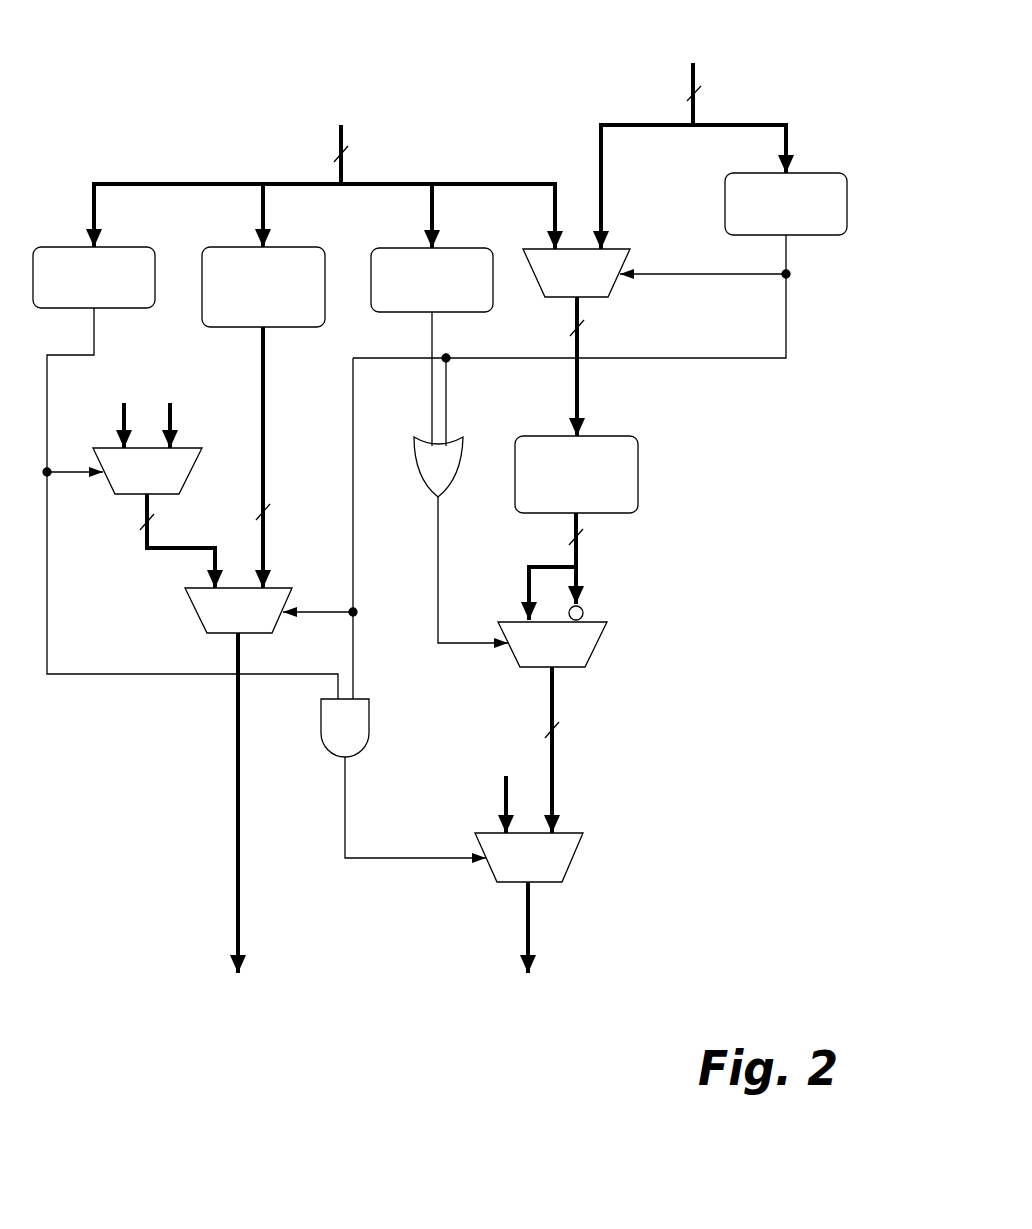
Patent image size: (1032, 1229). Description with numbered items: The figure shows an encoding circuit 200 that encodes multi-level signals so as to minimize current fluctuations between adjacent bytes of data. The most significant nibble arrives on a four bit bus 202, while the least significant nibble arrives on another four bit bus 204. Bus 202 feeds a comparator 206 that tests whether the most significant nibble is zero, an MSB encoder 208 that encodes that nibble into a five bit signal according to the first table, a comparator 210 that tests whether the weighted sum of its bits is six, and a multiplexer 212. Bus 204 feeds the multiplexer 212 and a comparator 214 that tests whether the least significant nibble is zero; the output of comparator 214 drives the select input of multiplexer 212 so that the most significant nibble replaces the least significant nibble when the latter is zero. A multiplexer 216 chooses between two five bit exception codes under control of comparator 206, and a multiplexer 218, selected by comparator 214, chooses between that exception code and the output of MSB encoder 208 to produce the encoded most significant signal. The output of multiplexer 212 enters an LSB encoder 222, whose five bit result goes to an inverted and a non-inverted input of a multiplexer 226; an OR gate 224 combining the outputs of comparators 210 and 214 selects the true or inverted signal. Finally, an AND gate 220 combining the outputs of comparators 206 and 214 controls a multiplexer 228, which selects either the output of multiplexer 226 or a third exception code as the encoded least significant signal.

The encoding circuit 200 is at (140, 75).
The four bit bus 202 is at (138, 183).
The four bit bus 204 is at (630, 123).
The comparator 206 is at (118, 247).
The MSB encoder 208 is at (286, 247).
The comparator 210 is at (455, 248).
The multiplexer 212 is at (622, 249).
The comparator 214 is at (753, 172).
The multiplexer 216 is at (185, 448).
The multiplexer 218 is at (193, 607).
The AND gate 220 is at (372, 727).
The LSB encoder 222 is at (640, 475).
The OR gate 224 is at (428, 497).
The multiplexer 226 is at (600, 620).
The multiplexer 228 is at (578, 833).